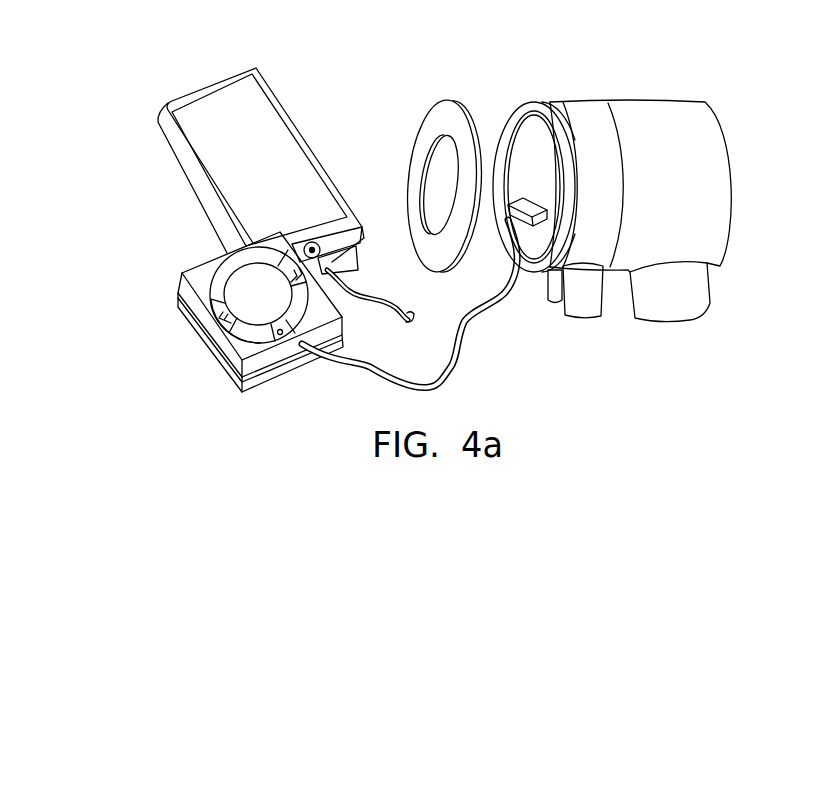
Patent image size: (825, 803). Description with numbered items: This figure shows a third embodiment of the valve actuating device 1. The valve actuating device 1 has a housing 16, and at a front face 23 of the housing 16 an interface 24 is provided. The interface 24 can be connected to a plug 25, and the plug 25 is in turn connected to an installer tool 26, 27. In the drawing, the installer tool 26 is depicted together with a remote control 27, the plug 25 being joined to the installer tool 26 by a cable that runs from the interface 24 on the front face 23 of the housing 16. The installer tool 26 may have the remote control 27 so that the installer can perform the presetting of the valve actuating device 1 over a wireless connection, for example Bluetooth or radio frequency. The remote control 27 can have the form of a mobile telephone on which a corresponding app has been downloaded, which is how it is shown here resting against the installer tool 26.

The valve actuating device 1 is at (590, 171).
The housing 16 is at (708, 192).
The front face 23 is at (538, 145).
The interface 24 is at (543, 203).
The plug 25 is at (530, 200).
The installer tool 26 is at (203, 353).
The remote control 27 is at (278, 136).